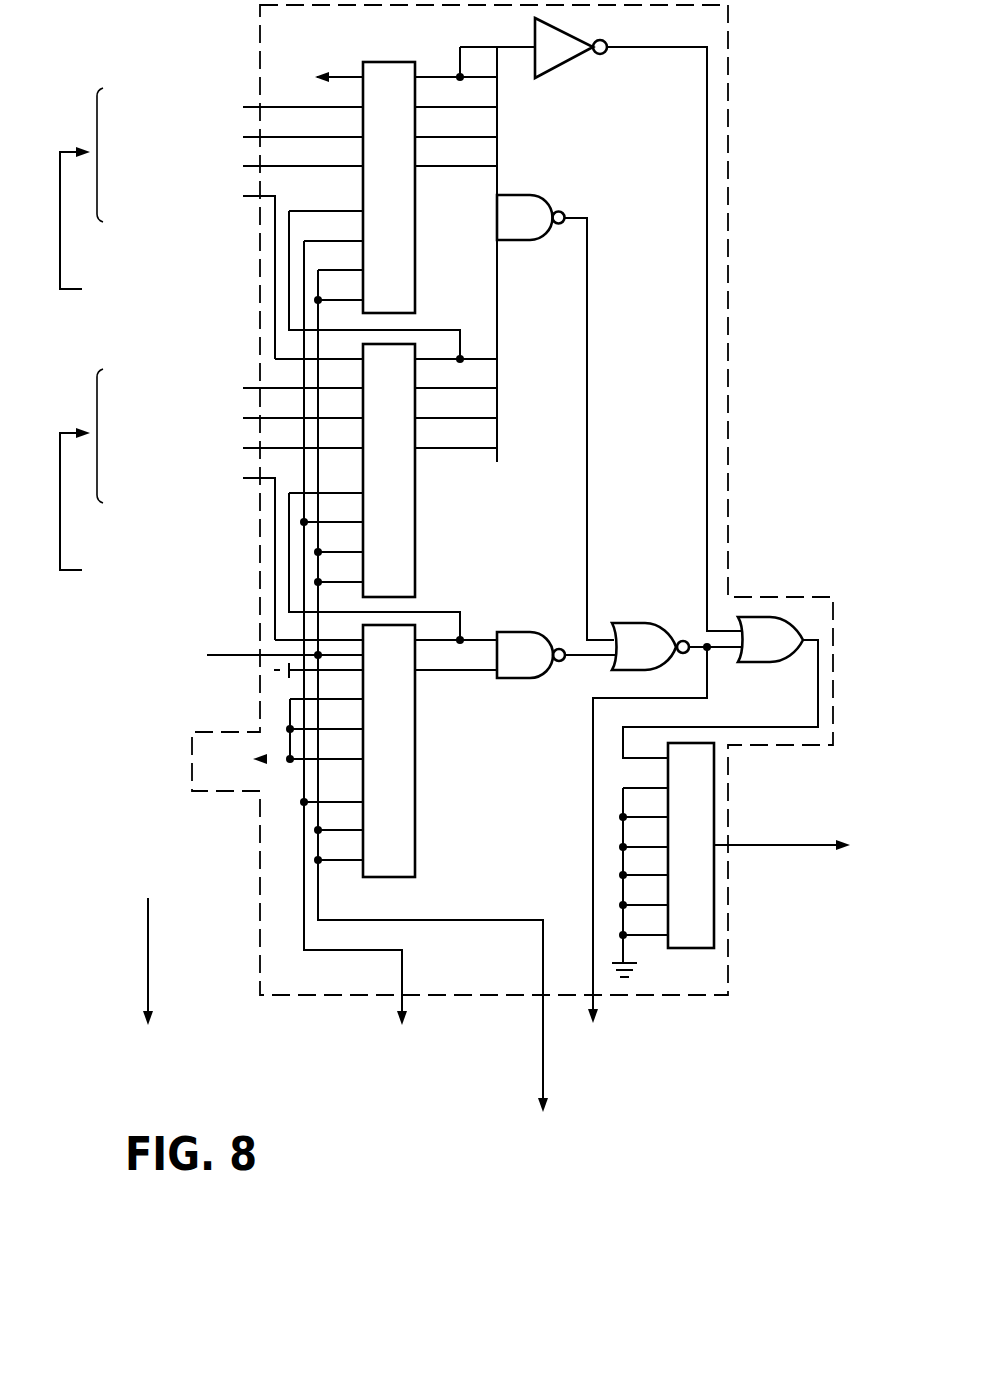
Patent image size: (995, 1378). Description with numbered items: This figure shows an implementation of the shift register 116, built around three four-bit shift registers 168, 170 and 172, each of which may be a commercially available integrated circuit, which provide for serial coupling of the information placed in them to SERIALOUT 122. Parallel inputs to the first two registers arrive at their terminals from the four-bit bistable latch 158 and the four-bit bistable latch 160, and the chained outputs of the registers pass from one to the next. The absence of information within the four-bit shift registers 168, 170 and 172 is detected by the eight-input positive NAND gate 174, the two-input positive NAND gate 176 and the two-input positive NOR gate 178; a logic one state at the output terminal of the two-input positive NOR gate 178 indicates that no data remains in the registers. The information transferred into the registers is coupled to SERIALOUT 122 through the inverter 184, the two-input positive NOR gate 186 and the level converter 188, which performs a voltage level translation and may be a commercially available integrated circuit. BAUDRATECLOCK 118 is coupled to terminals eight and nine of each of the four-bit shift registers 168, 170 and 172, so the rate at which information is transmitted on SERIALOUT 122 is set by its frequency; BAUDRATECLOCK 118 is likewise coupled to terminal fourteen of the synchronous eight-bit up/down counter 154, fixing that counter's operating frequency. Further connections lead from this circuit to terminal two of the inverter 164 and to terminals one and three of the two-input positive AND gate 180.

The shift register 116 is at (728, 228).
The BAUDRATECLOCK 118 is at (210, 652).
The SERIALOUT 122 is at (815, 813).
The synchronous 8-bit up/down counter 154 is at (611, 1168).
The 4-bit bistable latch 158 is at (144, 207).
The 4-bit bistable latch 160 is at (142, 697).
The inverter 164 is at (170, 1058).
The 4-bit shift register 168 is at (417, 230).
The 4-bit shift register 170 is at (417, 557).
The 4-bit shift register 172 is at (417, 753).
The 8-input positive NAND gate 174 is at (547, 234).
The 2-input positive NAND gate 176 is at (547, 633).
The 2-input positive NOR gate 178 is at (671, 633).
The 2-input positive AND gate 180 is at (573, 1080).
The inverter 184 is at (580, 57).
The 2-input positive NOR gate 186 is at (792, 656).
The level converter 188 is at (709, 953).